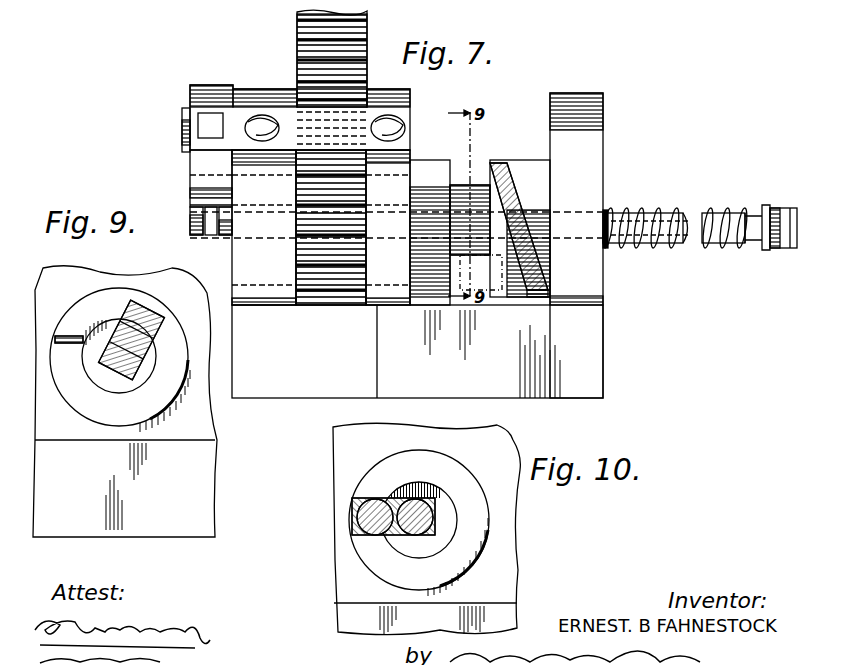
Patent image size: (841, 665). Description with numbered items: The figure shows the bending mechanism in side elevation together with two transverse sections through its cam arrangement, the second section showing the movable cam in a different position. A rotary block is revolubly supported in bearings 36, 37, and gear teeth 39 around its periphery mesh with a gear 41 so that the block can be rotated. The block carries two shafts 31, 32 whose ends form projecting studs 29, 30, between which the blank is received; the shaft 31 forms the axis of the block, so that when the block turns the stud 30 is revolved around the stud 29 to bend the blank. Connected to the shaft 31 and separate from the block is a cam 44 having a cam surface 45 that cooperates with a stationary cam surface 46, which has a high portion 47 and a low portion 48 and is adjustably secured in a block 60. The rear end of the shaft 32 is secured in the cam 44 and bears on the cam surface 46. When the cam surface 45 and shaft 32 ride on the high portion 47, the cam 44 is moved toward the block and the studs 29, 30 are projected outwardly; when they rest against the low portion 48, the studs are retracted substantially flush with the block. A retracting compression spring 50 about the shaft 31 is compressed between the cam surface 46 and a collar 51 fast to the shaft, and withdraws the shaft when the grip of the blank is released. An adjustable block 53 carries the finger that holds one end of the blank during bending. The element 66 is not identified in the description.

In FIG. 7, the adjustable block 53 is at (222, 72).
In FIG. 7, the gear 41 is at (300, 55).
In FIG. 7, the stud 30 is at (200, 193).
In FIG. 7, the stud 29 is at (188, 224).
In FIG. 7, the shaft 31 is at (208, 230).
In FIG. 9, the shaft 31 is at (108, 370).
In FIG. 10, the shaft 31 is at (418, 523).
In FIG. 7, the bearing 36 is at (264, 227).
In FIG. 7, the bearing 37 is at (388, 227).
In FIG. 7, the gear teeth 39 is at (336, 262).
In FIG. 7, the cam 44 is at (430, 232).
In FIG. 7, the cam surface 45 is at (480, 178).
In FIG. 10, the cam surface 45 is at (353, 533).
In FIG. 7, the stationary cam surface 46 is at (546, 232).
In FIG. 9, the stationary cam surface 46 is at (145, 395).
In FIG. 10, the stationary cam surface 46 is at (461, 492).
In FIG. 7, the high portion 47 is at (490, 180).
In FIG. 9, the high portion 47 is at (109, 340).
In FIG. 10, the high portion 47 is at (363, 497).
In FIG. 7, the low portion 48 is at (530, 292).
In FIG. 9, the low portion 48 is at (63, 347).
In FIG. 10, the low portion 48 is at (350, 504).
In FIG. 7, the frame column 66 is at (580, 152).
In FIG. 7, the retracting compression spring 50 is at (672, 208).
In FIG. 7, the collar 51 is at (755, 214).
In FIG. 9, the shaft 32 is at (132, 356).
In FIG. 10, the shaft 32 is at (378, 523).
In FIG. 9, the block 60 is at (197, 383).
In FIG. 10, the block 60 is at (426, 528).